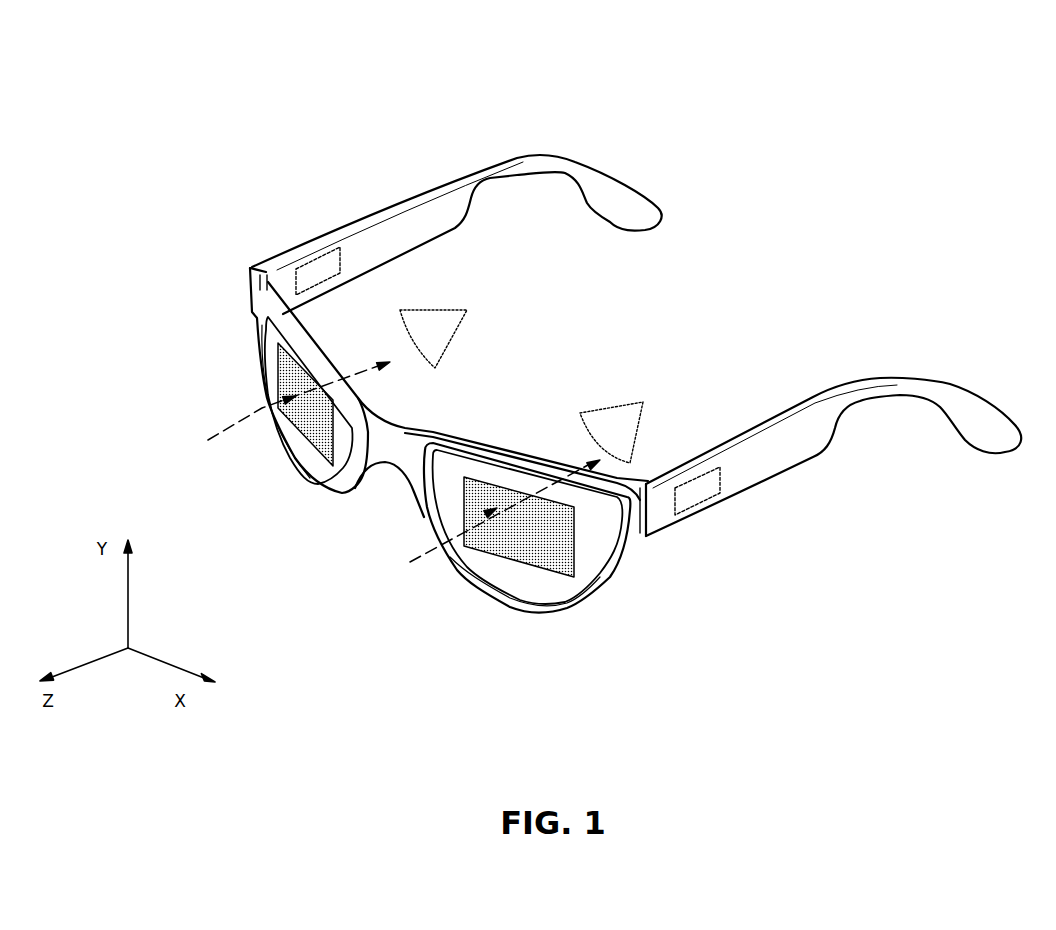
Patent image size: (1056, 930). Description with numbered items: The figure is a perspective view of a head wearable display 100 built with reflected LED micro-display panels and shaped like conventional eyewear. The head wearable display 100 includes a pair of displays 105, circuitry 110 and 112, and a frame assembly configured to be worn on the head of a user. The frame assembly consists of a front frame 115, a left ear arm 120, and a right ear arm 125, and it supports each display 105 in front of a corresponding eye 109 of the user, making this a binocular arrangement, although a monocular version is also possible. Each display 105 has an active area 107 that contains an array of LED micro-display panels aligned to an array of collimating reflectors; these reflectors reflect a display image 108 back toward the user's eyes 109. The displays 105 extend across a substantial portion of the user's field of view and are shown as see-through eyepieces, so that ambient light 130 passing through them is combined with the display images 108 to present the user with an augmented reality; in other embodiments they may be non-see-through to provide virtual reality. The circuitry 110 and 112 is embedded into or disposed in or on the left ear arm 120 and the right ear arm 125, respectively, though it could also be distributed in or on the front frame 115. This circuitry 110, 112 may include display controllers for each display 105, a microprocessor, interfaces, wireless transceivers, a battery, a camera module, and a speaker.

The head wearable display 100 is at (898, 143).
The display 105 is at (298, 457).
The active area 107 is at (333, 464).
The display image 108 is at (377, 362).
The user's eye 109 is at (419, 337).
The circuitry 110 is at (698, 494).
The circuitry 112 is at (318, 272).
The front frame 115 is at (393, 442).
The left ear arm 120 is at (822, 397).
The right ear arm 125 is at (405, 198).
The ambient light 130 is at (227, 425).